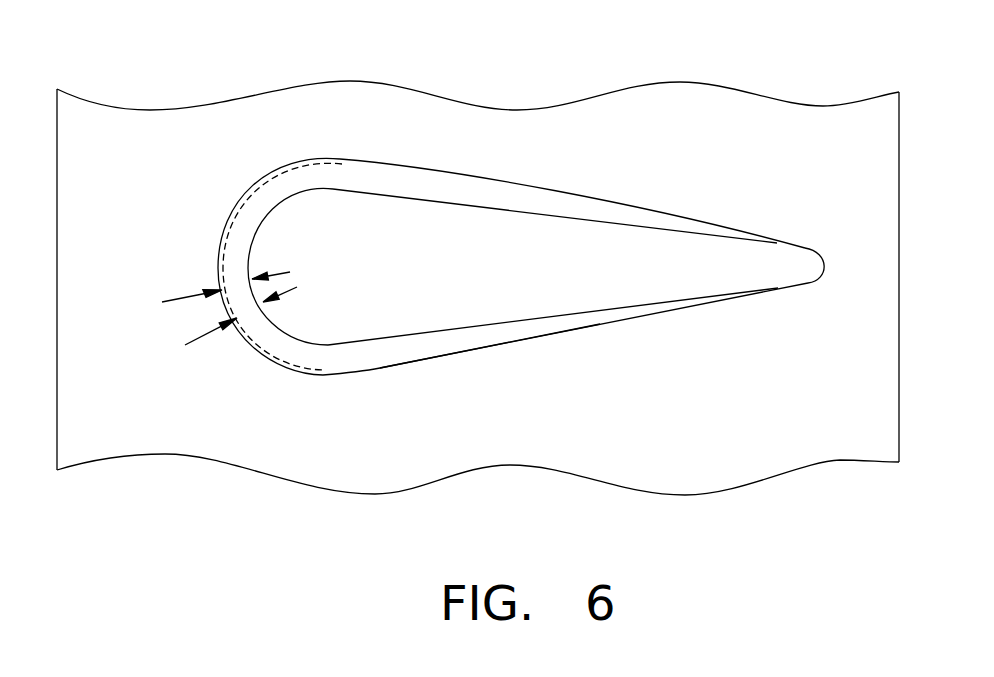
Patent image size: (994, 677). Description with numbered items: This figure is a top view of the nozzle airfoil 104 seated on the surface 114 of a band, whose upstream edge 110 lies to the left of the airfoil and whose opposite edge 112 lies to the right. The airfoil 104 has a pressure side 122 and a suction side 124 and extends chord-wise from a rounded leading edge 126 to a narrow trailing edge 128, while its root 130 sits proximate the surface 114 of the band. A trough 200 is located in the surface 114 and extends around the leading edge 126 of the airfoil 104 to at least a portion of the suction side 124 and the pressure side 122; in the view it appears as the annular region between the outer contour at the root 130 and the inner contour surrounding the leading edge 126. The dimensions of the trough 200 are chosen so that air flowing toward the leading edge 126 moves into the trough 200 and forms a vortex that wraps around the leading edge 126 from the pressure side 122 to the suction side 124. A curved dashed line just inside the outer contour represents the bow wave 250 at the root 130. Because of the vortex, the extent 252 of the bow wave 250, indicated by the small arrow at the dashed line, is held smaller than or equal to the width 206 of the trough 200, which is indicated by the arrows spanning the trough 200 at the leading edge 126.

The nozzle airfoil 104 is at (567, 278).
The upstream edge 110 is at (57, 167).
The substrate 112 is at (900, 145).
The surface 114 is at (690, 122).
The pressure side 122 is at (420, 198).
The suction side 124 is at (325, 348).
The leading edge 126 is at (248, 293).
The trailing edge 128 is at (807, 267).
The root 130 is at (251, 247).
The trough 200 is at (398, 350).
The width 206 is at (176, 297).
The bow wave 250 is at (282, 165).
The extent 252 is at (205, 338).